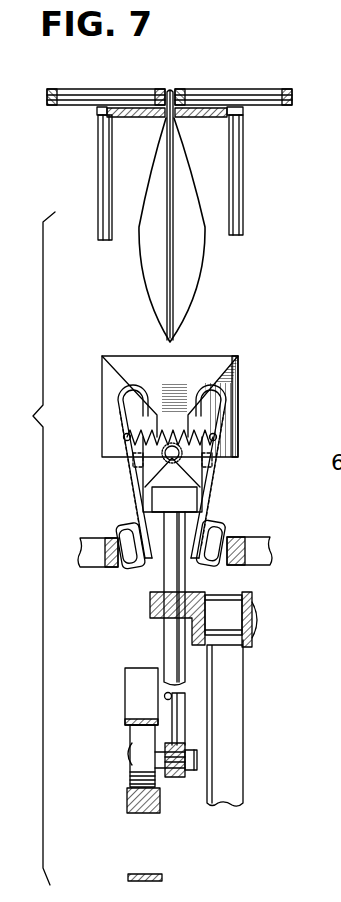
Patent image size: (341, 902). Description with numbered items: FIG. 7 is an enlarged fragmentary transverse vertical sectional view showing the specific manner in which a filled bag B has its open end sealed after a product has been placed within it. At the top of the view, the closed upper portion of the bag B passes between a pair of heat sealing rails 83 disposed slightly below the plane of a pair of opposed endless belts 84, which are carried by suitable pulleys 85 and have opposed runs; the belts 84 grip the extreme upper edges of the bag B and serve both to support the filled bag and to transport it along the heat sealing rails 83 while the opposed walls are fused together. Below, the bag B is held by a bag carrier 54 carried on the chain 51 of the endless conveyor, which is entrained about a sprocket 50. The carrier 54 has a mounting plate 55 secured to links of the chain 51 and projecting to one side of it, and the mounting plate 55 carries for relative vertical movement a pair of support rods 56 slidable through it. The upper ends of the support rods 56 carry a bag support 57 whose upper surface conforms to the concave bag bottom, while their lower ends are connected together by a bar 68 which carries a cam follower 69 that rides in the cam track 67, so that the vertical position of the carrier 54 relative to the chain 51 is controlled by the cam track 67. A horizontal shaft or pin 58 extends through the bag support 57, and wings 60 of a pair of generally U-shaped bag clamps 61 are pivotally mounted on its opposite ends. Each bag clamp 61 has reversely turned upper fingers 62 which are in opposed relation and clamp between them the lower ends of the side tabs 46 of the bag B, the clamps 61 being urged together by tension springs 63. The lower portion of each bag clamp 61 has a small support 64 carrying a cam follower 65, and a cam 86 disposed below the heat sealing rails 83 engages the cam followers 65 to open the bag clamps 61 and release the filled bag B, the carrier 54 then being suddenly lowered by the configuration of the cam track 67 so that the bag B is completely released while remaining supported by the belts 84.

The bag B is at (200, 282).
The side tabs 46 is at (173, 304).
The sprocket 50 is at (233, 688).
The chain 51 is at (253, 647).
The bag carrier 54 is at (181, 457).
The mounting plate 55 is at (152, 605).
The support rods 56 is at (170, 710).
The bag support 57 is at (242, 400).
The horizontal shaft or pin 58 is at (172, 474).
The wings 60 is at (138, 461).
The bag clamp 61 is at (137, 478).
The upper fingers 62 is at (195, 384).
The tension springs 63 is at (143, 433).
The support 64 is at (138, 517).
The cam follower 65 is at (132, 553).
The cam track 67 is at (128, 803).
The bar 68 is at (173, 778).
The cam follower 69 is at (132, 735).
The heat sealing rails 83 is at (133, 118).
The endless belts 84 is at (47, 98).
The pulleys 85 is at (88, 87).
The cam 86 is at (90, 567).